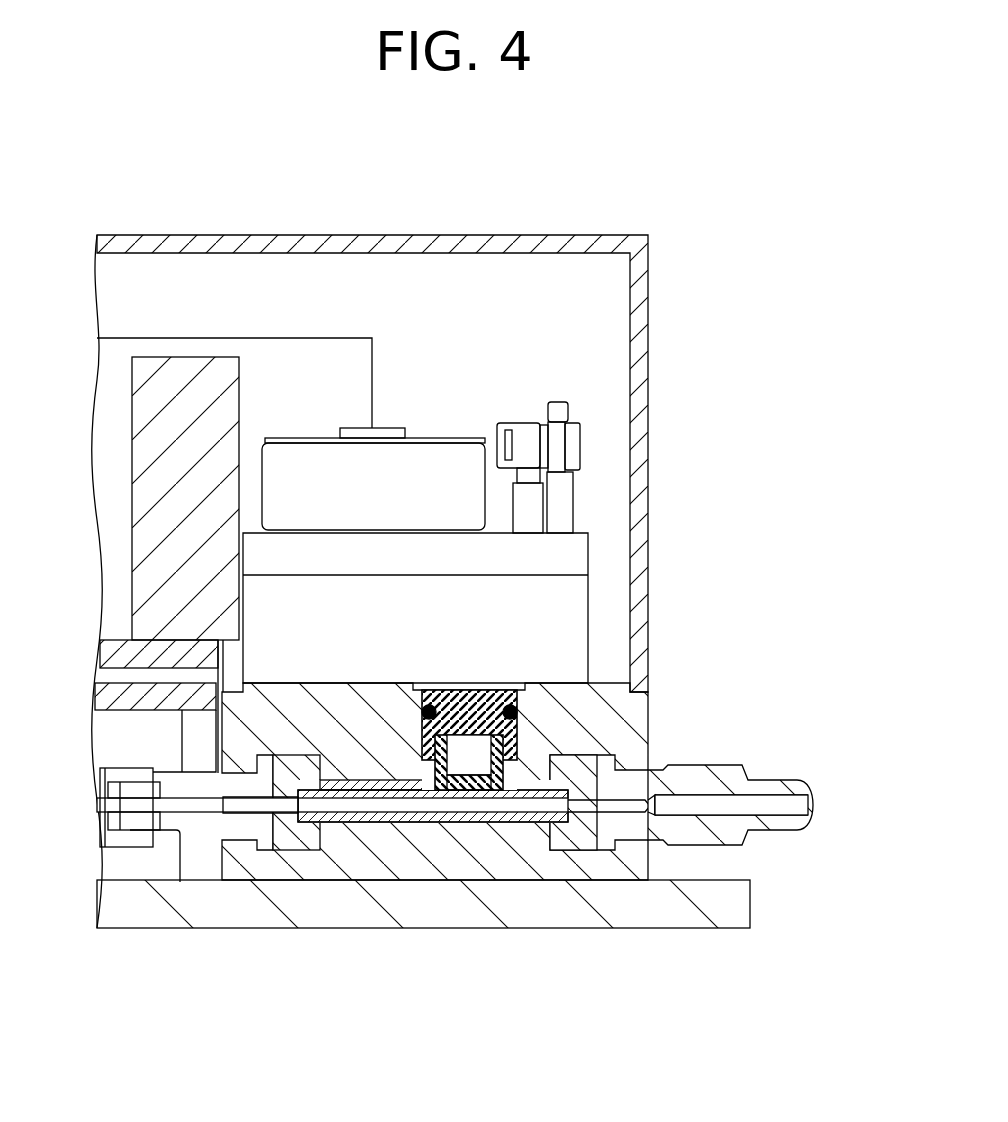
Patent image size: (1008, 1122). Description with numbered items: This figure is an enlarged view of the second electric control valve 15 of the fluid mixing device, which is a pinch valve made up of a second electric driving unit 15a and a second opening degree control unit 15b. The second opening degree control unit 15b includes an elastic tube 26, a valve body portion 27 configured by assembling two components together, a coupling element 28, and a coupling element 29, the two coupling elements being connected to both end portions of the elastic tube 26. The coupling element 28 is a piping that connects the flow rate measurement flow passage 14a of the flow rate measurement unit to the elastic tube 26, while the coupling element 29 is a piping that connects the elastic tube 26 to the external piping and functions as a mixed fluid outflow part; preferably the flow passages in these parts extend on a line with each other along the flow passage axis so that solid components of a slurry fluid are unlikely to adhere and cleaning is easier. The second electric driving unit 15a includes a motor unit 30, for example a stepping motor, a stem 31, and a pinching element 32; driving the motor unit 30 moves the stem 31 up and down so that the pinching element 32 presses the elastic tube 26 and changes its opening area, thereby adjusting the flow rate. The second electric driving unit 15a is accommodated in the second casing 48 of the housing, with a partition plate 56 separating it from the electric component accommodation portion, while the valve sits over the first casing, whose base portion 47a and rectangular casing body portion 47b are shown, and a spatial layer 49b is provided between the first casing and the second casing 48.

The partition plate 56 is at (185, 405).
The motor unit 30 is at (437, 462).
The second casing 48 is at (638, 357).
The second electric control valve 15 is at (593, 503).
The second electric driving unit 15a is at (540, 625).
The valve body portion 27 is at (638, 705).
The stem 31 is at (545, 725).
The coupling element 29 is at (710, 775).
The flow rate measurement flow passage 14a is at (140, 805).
The casing body portion 47b is at (166, 752).
The coupling element 28 is at (190, 735).
The spatial layer 49b is at (226, 700).
The elastic tube 26 is at (352, 823).
The pinching element 32 is at (447, 788).
The second opening degree control unit 15b is at (468, 790).
The base portion 47a is at (575, 905).